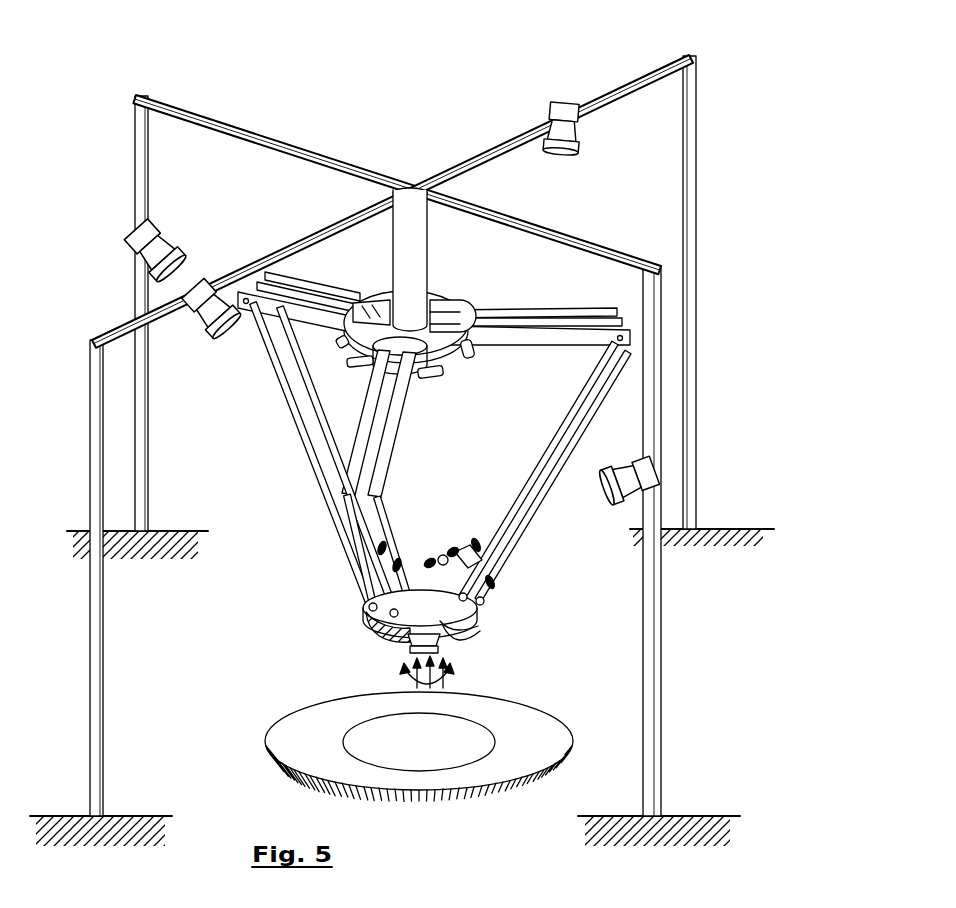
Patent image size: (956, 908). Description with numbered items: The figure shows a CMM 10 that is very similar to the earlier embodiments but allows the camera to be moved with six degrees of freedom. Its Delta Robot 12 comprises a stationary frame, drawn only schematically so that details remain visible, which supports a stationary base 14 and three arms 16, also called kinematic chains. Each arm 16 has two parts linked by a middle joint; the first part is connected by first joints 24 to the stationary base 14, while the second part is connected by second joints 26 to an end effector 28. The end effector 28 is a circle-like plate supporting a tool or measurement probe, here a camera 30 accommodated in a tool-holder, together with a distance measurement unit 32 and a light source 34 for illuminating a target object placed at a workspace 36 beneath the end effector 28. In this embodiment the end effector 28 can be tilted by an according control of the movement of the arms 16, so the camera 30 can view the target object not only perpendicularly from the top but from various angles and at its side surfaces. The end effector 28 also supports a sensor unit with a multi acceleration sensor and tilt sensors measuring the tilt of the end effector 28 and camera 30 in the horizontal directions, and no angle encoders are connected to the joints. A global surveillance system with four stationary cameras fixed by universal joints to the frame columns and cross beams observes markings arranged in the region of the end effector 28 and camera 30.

The CMM 10 is at (264, 84).
The Delta Robot 12 is at (330, 122).
The stationary base 14 is at (432, 298).
The first joint 24 is at (468, 357).
The arm 16 is at (312, 466).
The second joint 26 is at (370, 607).
The end effector 28 is at (478, 617).
The camera 30 is at (410, 648).
The distance measurement unit 32 is at (370, 628).
The light source 34 is at (460, 640).
The workspace 36 is at (430, 748).